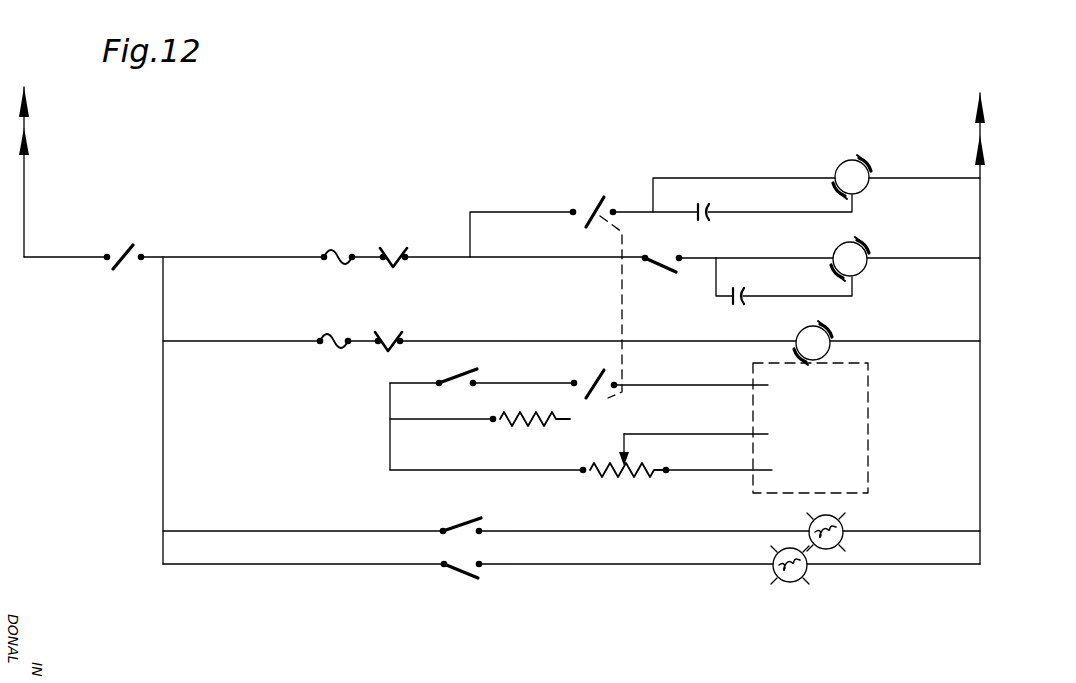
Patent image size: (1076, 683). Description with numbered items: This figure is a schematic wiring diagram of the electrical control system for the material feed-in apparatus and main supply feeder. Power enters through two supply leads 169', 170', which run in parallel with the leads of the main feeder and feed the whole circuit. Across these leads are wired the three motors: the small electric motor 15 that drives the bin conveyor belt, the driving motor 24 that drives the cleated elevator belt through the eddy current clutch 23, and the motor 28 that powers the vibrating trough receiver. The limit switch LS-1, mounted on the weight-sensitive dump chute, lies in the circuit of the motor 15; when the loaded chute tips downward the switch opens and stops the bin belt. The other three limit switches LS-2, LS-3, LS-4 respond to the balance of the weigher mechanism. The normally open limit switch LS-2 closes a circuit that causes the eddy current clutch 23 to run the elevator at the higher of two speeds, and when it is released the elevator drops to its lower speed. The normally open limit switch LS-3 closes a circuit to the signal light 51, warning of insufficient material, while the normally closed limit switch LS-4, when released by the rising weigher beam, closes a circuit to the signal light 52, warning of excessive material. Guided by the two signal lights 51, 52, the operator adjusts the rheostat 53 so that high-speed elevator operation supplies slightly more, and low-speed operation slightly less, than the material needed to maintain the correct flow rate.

The supply lead 169' is at (81, 178).
The supply lead 170' is at (1012, 328).
The motor 28 is at (839, 164).
The electric motor 15 is at (869, 268).
The driving motor 24 is at (835, 337).
The eddy current clutch 23 is at (871, 373).
The rheostat 53 is at (640, 477).
The signal light 51 is at (841, 527).
The signal light 52 is at (805, 582).
The limit switch LS-1 is at (665, 274).
The limit switch LS-2 is at (462, 366).
The limit switch LS-3 is at (462, 520).
The limit switch LS-4 is at (463, 580).